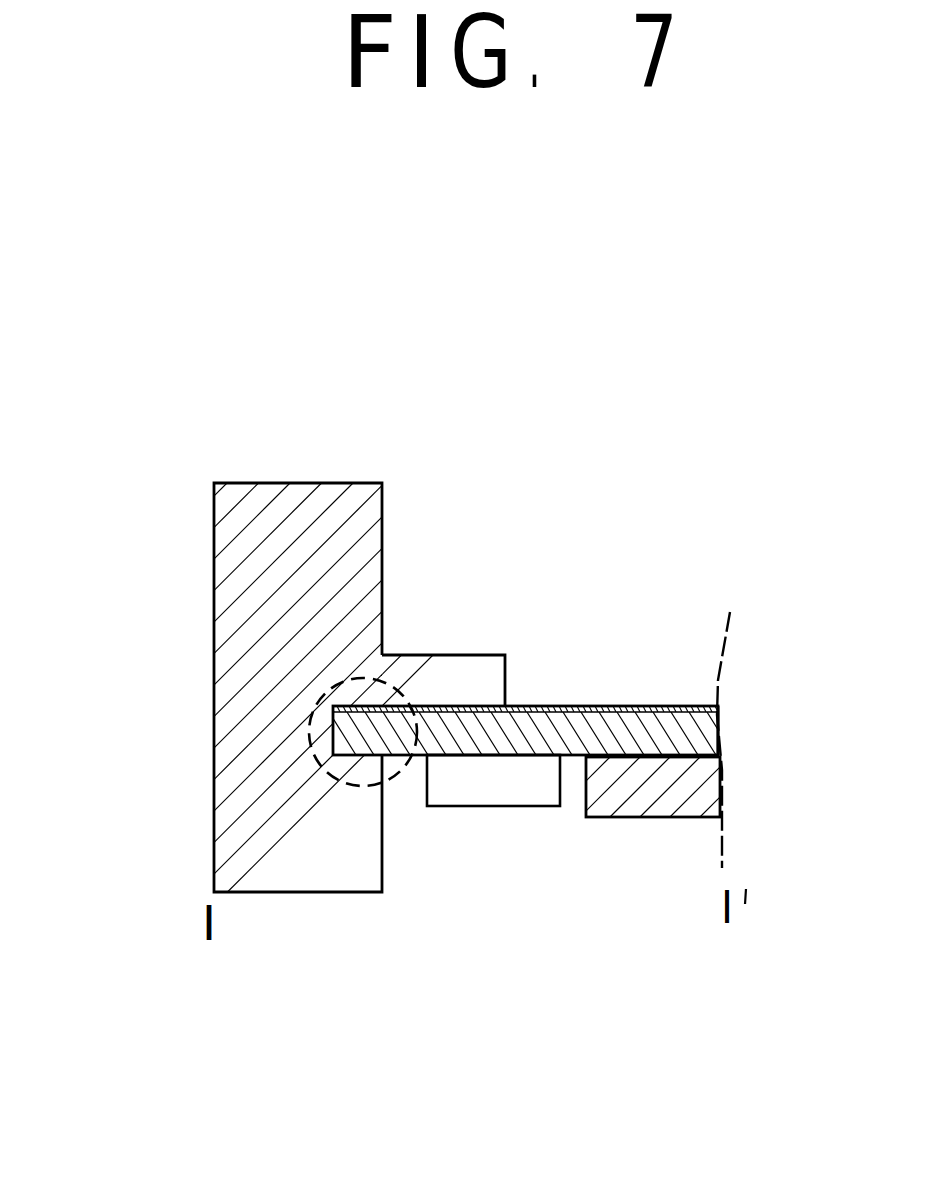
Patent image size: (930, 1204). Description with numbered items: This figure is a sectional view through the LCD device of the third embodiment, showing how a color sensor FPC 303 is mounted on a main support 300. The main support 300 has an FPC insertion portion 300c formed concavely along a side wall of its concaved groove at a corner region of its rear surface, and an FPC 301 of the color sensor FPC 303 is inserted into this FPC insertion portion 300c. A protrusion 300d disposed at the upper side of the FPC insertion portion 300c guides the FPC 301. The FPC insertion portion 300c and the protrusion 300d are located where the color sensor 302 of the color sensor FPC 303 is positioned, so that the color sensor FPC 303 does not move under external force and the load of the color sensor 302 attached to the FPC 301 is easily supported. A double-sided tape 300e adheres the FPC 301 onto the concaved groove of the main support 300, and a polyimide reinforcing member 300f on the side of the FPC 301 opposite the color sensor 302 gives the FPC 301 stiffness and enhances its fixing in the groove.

The main support 300 is at (626, 790).
The FPC insertion portion 300c is at (285, 718).
The protrusion 300d is at (441, 704).
The double-sided tape 300e is at (684, 760).
The polyimide reinforcing member 300f is at (676, 705).
The FPC 301 is at (607, 720).
The color sensor 302 is at (526, 782).
The color sensor FPC 303 is at (531, 550).